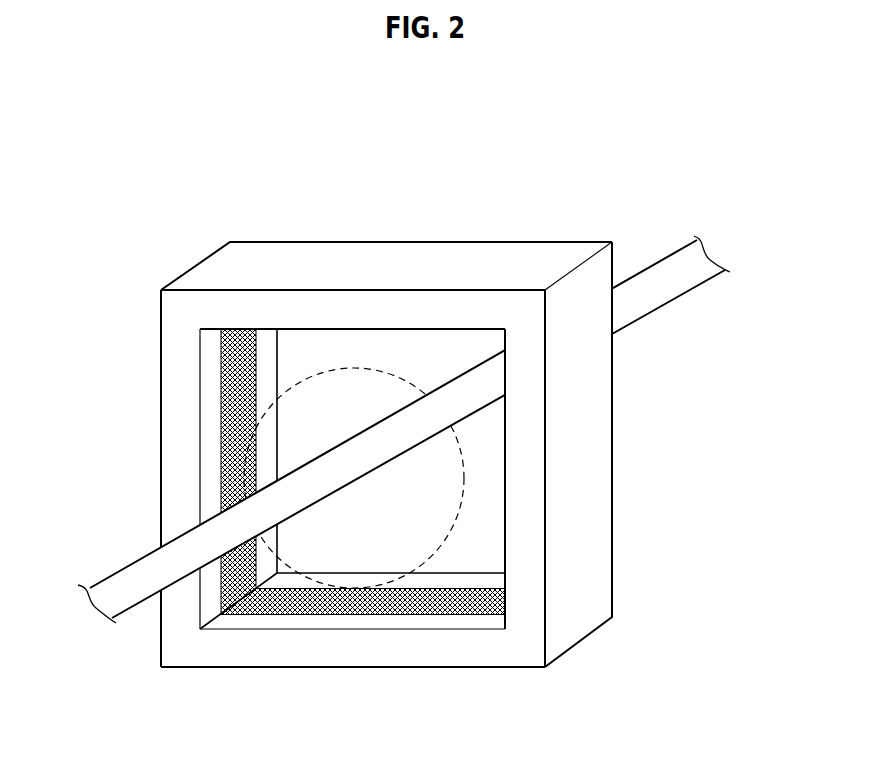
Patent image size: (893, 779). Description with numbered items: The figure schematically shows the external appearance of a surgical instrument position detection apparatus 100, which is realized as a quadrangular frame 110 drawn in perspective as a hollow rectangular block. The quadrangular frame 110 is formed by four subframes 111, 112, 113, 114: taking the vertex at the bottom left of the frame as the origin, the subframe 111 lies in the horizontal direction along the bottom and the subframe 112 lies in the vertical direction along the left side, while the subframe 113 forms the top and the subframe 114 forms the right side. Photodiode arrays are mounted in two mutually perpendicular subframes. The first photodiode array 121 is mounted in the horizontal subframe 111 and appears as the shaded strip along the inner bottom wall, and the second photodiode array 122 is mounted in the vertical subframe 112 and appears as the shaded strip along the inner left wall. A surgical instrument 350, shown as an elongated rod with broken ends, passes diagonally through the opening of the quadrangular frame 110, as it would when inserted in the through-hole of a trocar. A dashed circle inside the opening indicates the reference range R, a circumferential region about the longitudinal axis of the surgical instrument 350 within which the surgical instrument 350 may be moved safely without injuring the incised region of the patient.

The surgical instrument position detection apparatus 100 is at (421, 410).
The quadrangular frame 110 is at (421, 454).
The subframe 111 is at (380, 668).
The subframe 112 is at (162, 387).
The subframe 113 is at (444, 253).
The subframe 114 is at (600, 398).
The first photodiode array 121 is at (313, 615).
The second photodiode array 122 is at (222, 462).
The surgical instrument 350 is at (645, 275).
The reference range R is at (464, 478).